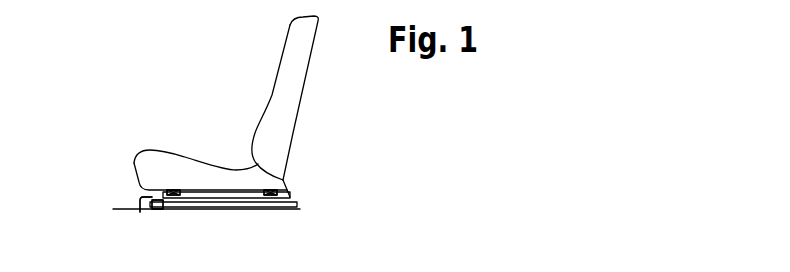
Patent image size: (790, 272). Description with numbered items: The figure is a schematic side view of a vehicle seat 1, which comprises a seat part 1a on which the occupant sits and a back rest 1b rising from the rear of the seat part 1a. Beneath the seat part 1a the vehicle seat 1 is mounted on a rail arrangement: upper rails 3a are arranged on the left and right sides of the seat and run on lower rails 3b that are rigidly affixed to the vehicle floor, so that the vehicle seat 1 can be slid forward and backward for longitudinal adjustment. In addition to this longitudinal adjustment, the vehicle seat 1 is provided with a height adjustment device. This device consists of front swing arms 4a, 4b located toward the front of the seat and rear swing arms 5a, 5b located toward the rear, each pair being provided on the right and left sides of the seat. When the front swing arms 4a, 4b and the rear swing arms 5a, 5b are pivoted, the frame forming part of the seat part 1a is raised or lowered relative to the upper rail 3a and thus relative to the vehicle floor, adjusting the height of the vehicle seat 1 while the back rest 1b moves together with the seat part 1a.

The vehicle seat 1 is at (193, 80).
The seat part 1a is at (165, 158).
The back rest 1b is at (299, 94).
The upper rail 3a is at (288, 194).
The lower rail 3b is at (161, 209).
The front swing arm 4a is at (139, 207).
The front swing arm 4b is at (139, 207).
The rear swing arm 5a is at (285, 189).
The rear swing arm 5b is at (285, 189).